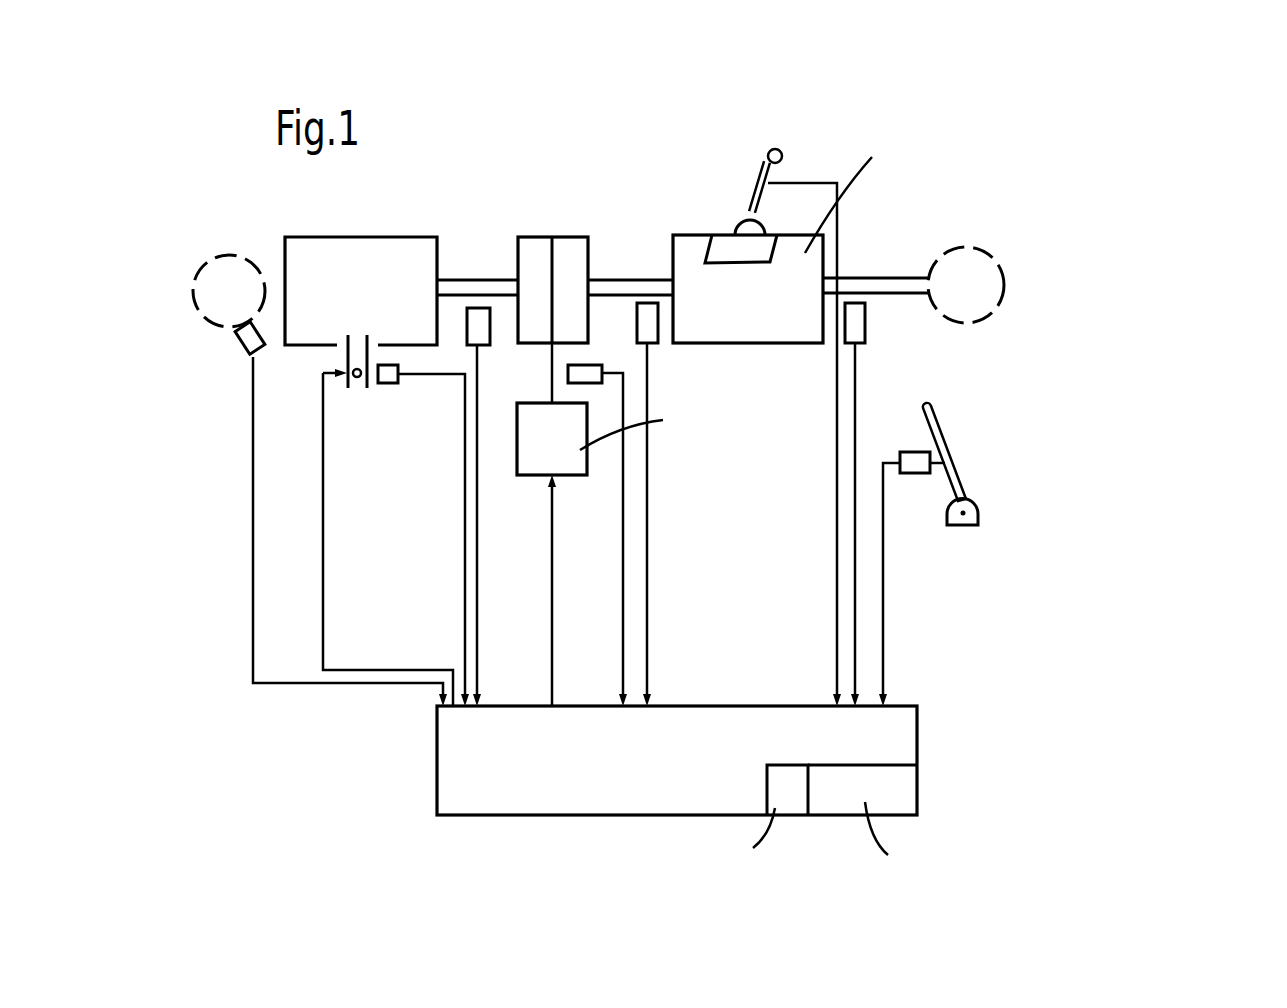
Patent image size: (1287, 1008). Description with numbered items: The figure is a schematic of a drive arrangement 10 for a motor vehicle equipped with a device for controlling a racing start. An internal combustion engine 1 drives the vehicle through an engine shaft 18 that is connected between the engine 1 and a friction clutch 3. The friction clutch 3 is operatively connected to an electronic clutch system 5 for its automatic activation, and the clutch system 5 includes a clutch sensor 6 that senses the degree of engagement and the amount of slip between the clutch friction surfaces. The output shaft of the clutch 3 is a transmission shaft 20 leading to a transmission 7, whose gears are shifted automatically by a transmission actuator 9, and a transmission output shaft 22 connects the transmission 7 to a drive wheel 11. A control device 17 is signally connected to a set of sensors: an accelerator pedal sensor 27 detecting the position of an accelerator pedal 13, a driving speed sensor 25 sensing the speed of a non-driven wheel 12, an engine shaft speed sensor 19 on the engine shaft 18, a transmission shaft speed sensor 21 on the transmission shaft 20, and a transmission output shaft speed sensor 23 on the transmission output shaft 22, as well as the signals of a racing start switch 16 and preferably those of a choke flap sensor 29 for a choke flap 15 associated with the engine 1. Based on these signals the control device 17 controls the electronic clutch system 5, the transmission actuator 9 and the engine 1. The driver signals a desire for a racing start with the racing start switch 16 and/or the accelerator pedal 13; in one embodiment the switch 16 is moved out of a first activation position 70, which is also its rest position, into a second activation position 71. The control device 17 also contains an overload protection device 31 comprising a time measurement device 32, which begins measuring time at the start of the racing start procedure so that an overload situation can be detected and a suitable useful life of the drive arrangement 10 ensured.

The internal combustion engine 1 is at (362, 237).
The friction clutch 3 is at (560, 250).
The electronic clutch system 5 is at (525, 480).
The clutch sensor 6 is at (595, 372).
The transmission 7 is at (693, 235).
The transmission actuator 9 is at (719, 247).
The drive arrangement 10 is at (270, 232).
The drive wheel 11 is at (988, 273).
The non-driven wheel 12 is at (212, 292).
The accelerator pedal 13 is at (938, 415).
The choke flap 15 is at (356, 402).
The racing start switch 16 is at (763, 147).
The control device 17 is at (908, 715).
The engine shaft 18 is at (455, 287).
The engine shaft speed sensor 19 is at (478, 320).
The transmission shaft 20 is at (608, 283).
The transmission shaft speed sensor 21 is at (648, 317).
The transmission output shaft 22 is at (905, 280).
The transmission output shaft speed sensor 23 is at (858, 313).
The driving speed sensor 25 is at (248, 350).
The accelerator pedal sensor 27 is at (905, 450).
The choke flap sensor 29 is at (393, 385).
The overload protection device 31 is at (908, 788).
The time measurement device 32 is at (787, 802).
The first activation position 70 is at (763, 148).
The second activation position 71 is at (748, 130).